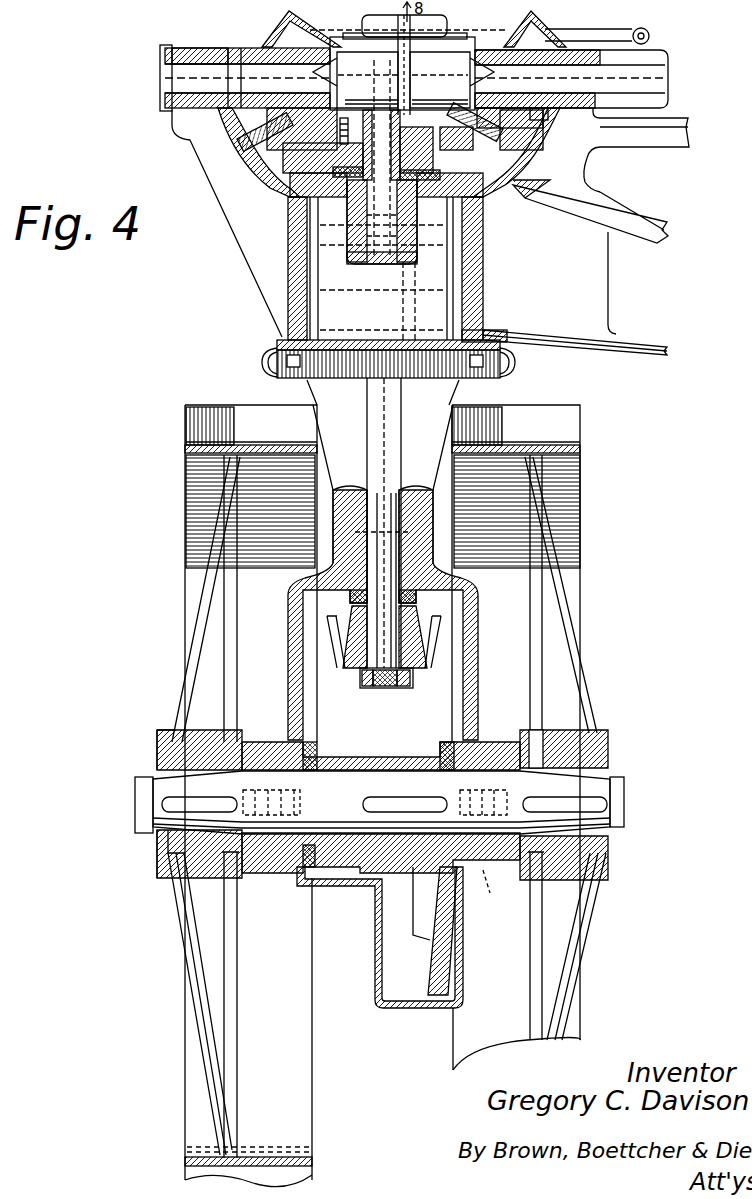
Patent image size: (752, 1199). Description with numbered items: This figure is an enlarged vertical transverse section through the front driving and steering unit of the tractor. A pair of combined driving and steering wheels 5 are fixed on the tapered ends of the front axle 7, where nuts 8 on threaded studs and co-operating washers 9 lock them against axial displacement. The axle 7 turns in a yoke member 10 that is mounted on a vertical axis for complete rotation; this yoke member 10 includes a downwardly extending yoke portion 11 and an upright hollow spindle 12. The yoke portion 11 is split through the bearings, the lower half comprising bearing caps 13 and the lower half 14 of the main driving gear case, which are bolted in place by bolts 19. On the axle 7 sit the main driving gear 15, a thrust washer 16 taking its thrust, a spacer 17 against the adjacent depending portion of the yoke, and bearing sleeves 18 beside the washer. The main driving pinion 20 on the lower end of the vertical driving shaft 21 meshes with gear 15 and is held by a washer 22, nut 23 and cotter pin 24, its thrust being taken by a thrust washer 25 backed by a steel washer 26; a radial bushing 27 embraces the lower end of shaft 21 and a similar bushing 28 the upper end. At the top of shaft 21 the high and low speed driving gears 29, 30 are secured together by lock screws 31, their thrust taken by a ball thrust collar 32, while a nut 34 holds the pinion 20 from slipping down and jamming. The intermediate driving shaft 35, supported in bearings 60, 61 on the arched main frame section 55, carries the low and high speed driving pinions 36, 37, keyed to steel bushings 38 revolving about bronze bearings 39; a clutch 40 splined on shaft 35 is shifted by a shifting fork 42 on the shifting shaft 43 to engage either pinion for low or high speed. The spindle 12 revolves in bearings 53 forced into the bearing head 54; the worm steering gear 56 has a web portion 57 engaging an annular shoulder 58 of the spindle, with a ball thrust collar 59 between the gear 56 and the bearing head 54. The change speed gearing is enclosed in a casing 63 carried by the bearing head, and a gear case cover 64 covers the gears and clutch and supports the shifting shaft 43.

The combined driving and steering wheels 5 is at (200, 503).
The front axle 7 is at (507, 782).
The nuts 8 is at (135, 794).
The washers 9 is at (155, 842).
The yoke member 10 is at (432, 405).
The yoke portion 11 is at (292, 665).
The hollow spindle or standard 12 is at (318, 278).
The bearing caps 13 is at (266, 862).
The lower half of the main driving gear case 14 is at (375, 930).
The main driving gear 15 is at (402, 860).
The thrust washer 16 is at (316, 860).
The spacer 17 is at (338, 766).
The bearing sleeves 18 is at (310, 752).
The bolts 19 is at (495, 886).
The main driving pinion 20 is at (362, 672).
The vertical driving shaft 21 is at (412, 612).
The washer 22 is at (392, 686).
The nut 23 is at (400, 688).
The cotter pin 24 is at (368, 686).
The thrust washer 25 is at (350, 623).
The steel washer 26 is at (360, 603).
The radial bushing or sleeve 27 is at (430, 546).
The bushing or sleeve 28 is at (400, 212).
The high speed driving gear 29 is at (472, 136).
The low speed driving gear 30 is at (316, 146).
The lock screws 31 is at (440, 154).
The ball thrust collar 32 is at (340, 188).
The nut 34 is at (405, 112).
The intermediate driving shaft 35 is at (666, 70).
The low speed driving pinion 36 is at (540, 135).
The high speed driving pinion 37 is at (280, 44).
The steel bushings 38 is at (234, 48).
The bronze bearings 39 is at (192, 48).
The clutch 40 is at (452, 80).
The shifting fork 42 is at (408, 65).
The shifting shaft 43 is at (642, 30).
The bearings 53 is at (290, 207).
The bearing head 54 is at (292, 250).
The arched main frame section 55 is at (650, 352).
The worm steering gear 56 is at (286, 345).
The web portion 57 is at (262, 361).
The annular shoulder or flange 58 is at (306, 370).
The ball thrust collar 59 is at (497, 333).
The outer bearing 60 is at (165, 60).
The intermediate bearing 61 is at (602, 150).
The casing 63 is at (238, 152).
The gear case cover 64 is at (355, 80).